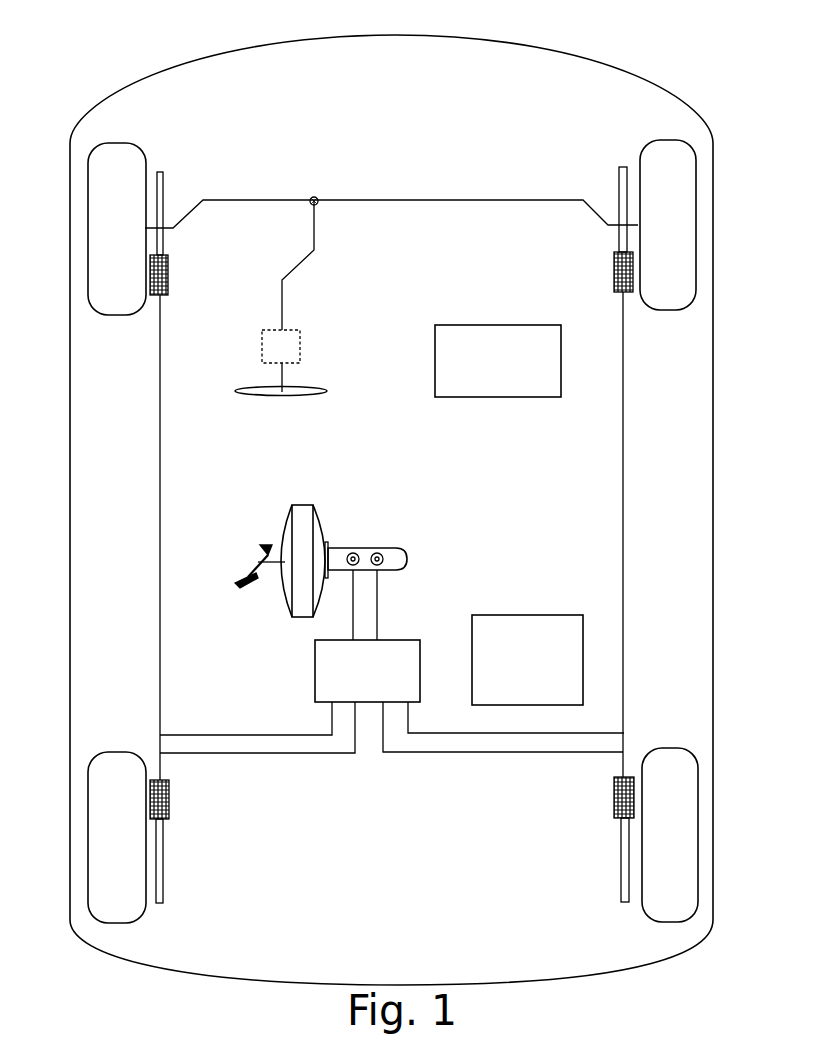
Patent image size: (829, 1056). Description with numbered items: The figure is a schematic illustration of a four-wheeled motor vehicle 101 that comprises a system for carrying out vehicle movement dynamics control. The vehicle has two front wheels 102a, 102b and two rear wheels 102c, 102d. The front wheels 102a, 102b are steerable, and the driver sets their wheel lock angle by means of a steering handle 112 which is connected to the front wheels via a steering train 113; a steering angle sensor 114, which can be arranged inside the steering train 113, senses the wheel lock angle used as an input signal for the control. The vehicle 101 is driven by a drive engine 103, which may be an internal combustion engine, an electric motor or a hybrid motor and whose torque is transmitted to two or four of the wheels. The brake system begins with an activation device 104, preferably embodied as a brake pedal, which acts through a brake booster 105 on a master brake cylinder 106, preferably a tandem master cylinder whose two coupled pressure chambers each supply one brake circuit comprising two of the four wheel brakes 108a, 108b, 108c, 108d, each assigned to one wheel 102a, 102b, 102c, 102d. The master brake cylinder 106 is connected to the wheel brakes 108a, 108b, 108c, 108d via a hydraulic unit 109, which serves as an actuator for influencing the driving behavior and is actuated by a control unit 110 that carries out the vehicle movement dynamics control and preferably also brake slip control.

The motor vehicle 101 is at (247, 50).
The front left-hand wheel 102a is at (112, 143).
The front right-hand wheel 102b is at (688, 142).
The rear left-hand wheel 102c is at (95, 921).
The rear right-hand wheel 102d is at (686, 921).
The drive engine 103 is at (435, 333).
The activation device 104 is at (262, 550).
The brake booster 105 is at (288, 530).
The master brake cylinder 106 is at (356, 548).
The front left-hand wheel brake 108a is at (168, 288).
The front right-hand wheel brake 108b is at (626, 293).
The rear left-hand wheel brake 108c is at (170, 803).
The rear right-hand wheel brake 108d is at (613, 803).
The hydraulic unit 109 is at (315, 663).
The control unit (ECU) 110 is at (473, 615).
The steering handle 112 is at (254, 397).
The steering train 113 is at (387, 201).
The steering angle sensor 114 is at (262, 346).